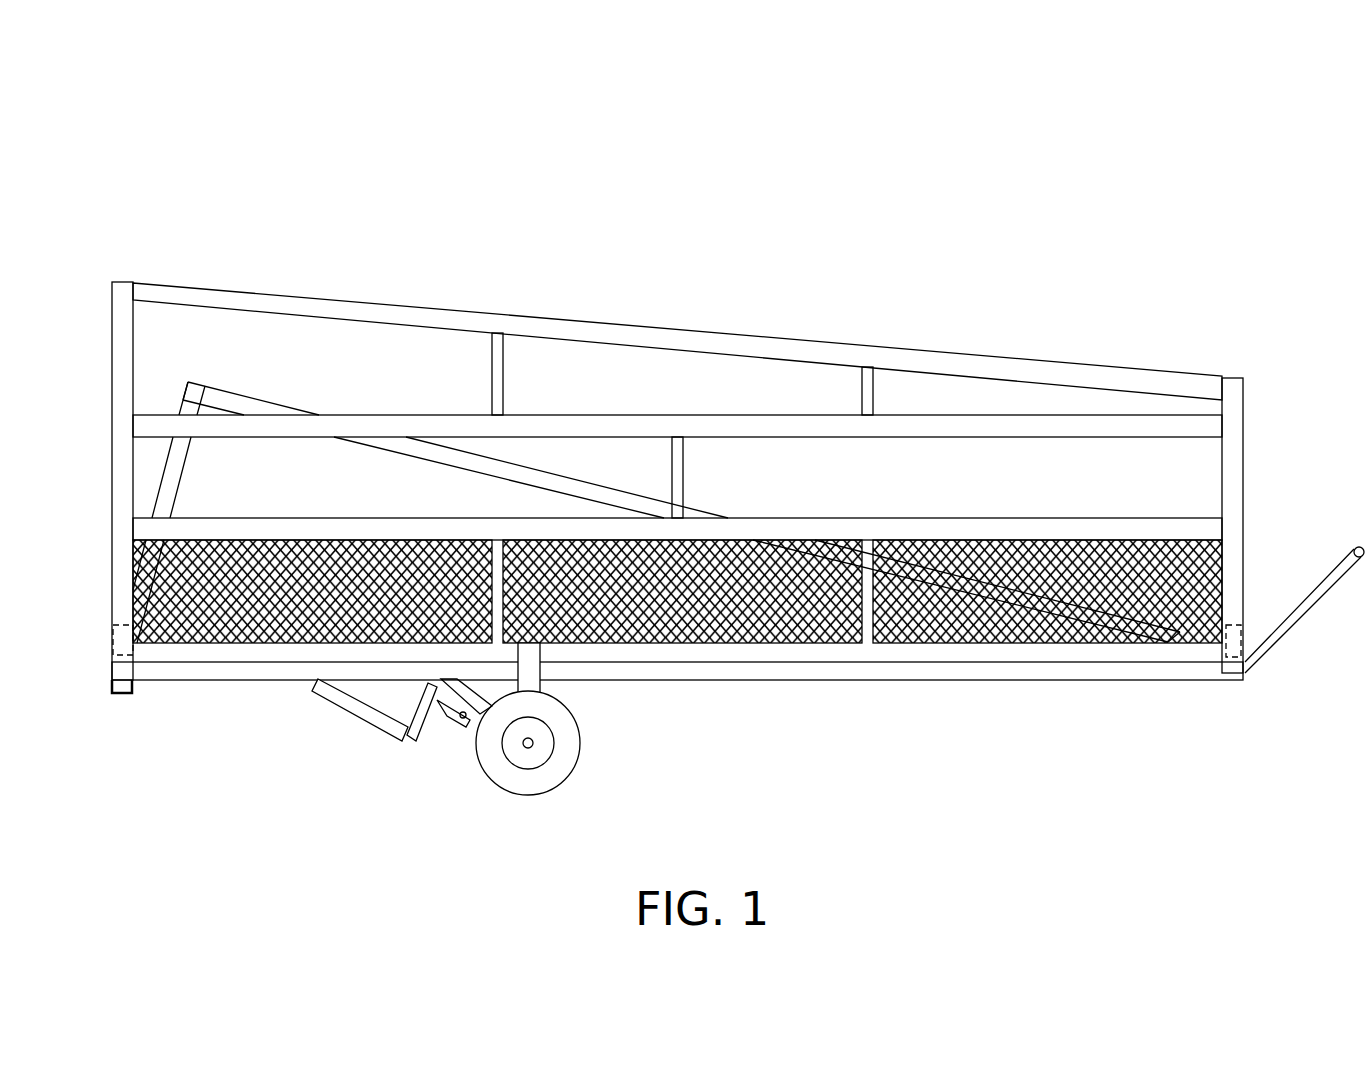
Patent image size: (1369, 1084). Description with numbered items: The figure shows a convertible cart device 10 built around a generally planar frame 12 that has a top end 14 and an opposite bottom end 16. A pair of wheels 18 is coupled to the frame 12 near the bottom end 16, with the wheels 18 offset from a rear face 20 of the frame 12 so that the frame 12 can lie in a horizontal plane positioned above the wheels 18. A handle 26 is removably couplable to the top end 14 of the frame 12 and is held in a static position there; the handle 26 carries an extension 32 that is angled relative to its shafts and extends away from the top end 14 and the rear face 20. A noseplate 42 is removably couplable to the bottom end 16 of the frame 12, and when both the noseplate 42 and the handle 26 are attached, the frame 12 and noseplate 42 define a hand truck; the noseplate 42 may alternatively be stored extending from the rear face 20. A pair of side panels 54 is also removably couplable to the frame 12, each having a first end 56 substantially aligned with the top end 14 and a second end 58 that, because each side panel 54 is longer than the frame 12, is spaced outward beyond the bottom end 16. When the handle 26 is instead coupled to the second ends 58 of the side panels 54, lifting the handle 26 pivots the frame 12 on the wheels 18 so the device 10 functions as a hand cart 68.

The convertible cart device 10 is at (1093, 178).
The frame 12 is at (220, 680).
The top end 14 is at (112, 672).
The bottom end 16 is at (540, 676).
The wheels 18 is at (530, 794).
The rear face 20 is at (286, 728).
The handle 26 is at (1310, 697).
The extension 32 is at (1325, 587).
The noseplate 42 is at (382, 733).
The side panels 54 is at (245, 292).
The first end 56 is at (122, 363).
The second end 58 is at (1245, 442).
The hand cart 68 is at (832, 743).